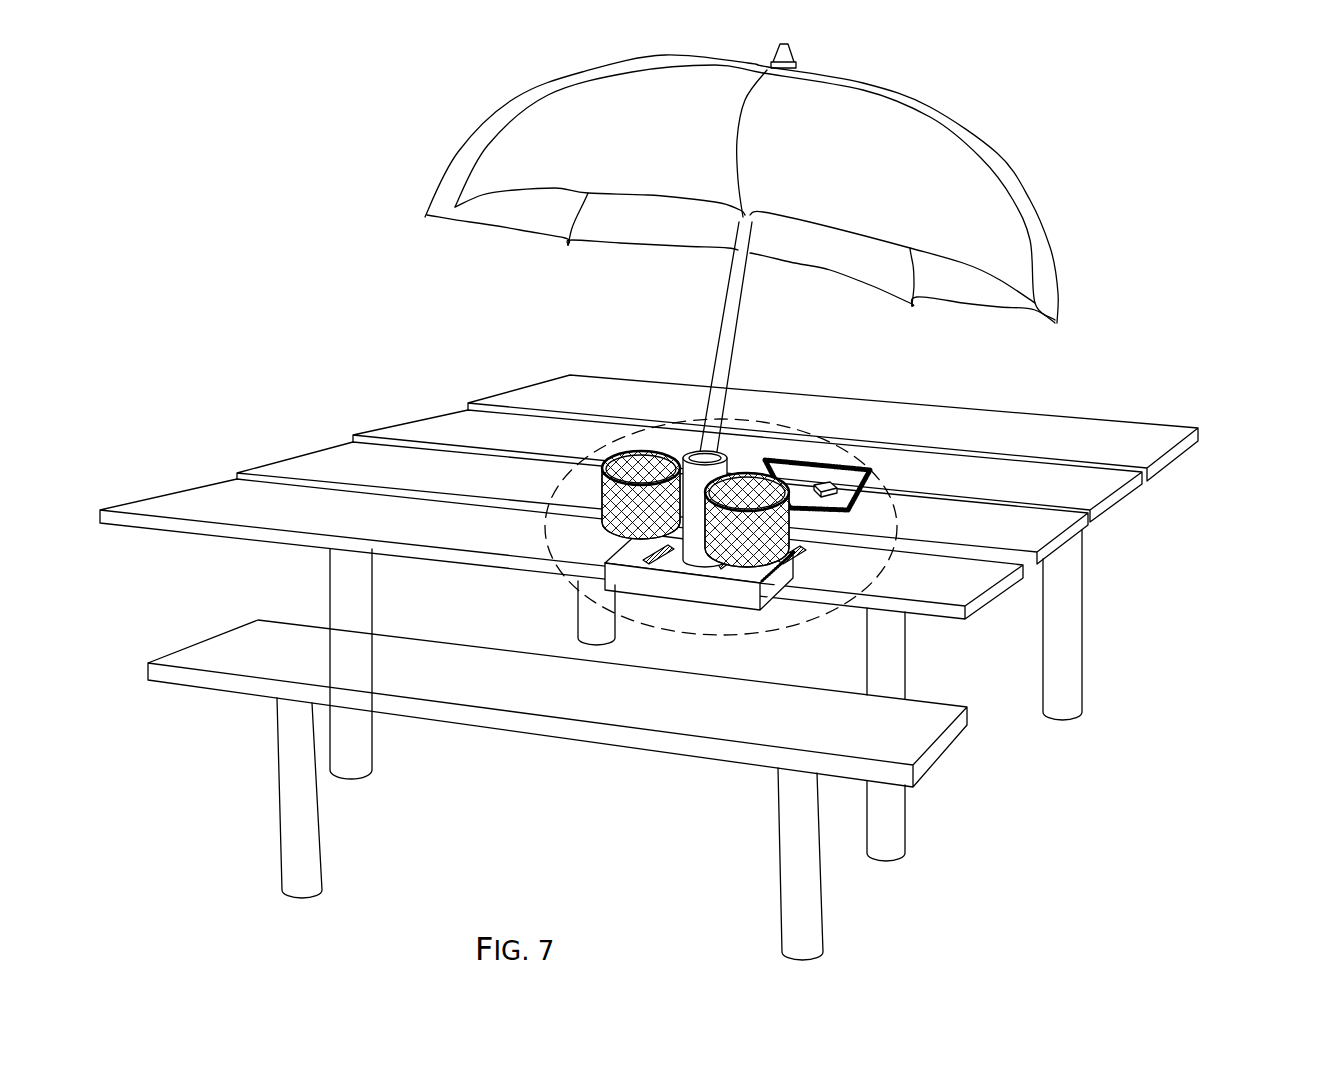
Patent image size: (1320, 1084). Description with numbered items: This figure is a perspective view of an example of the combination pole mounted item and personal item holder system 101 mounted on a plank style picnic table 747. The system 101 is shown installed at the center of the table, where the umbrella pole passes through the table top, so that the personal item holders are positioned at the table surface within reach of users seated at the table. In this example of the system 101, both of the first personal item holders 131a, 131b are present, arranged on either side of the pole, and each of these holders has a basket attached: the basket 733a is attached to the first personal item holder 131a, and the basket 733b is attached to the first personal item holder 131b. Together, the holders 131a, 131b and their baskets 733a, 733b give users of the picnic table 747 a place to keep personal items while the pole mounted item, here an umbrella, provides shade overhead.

The picnic table 747 is at (375, 413).
The system 101 is at (896, 565).
The first personal item holder 131a is at (604, 467).
The first personal item holder 131b is at (792, 531).
The basket 733a is at (606, 522).
The basket 733b is at (800, 551).